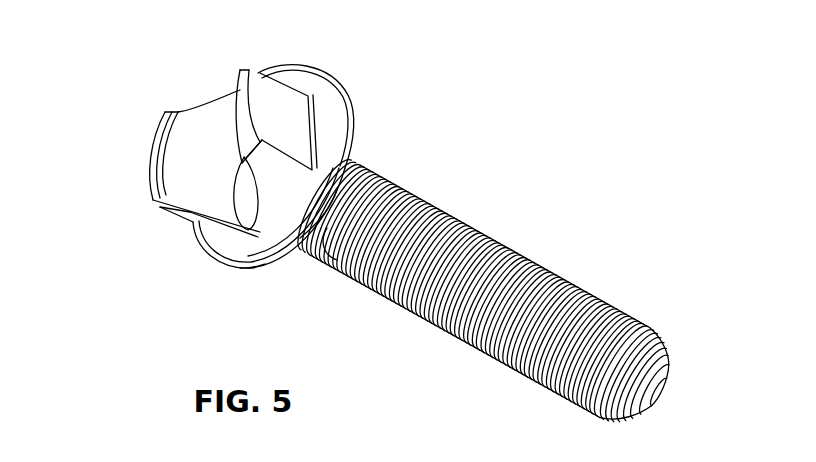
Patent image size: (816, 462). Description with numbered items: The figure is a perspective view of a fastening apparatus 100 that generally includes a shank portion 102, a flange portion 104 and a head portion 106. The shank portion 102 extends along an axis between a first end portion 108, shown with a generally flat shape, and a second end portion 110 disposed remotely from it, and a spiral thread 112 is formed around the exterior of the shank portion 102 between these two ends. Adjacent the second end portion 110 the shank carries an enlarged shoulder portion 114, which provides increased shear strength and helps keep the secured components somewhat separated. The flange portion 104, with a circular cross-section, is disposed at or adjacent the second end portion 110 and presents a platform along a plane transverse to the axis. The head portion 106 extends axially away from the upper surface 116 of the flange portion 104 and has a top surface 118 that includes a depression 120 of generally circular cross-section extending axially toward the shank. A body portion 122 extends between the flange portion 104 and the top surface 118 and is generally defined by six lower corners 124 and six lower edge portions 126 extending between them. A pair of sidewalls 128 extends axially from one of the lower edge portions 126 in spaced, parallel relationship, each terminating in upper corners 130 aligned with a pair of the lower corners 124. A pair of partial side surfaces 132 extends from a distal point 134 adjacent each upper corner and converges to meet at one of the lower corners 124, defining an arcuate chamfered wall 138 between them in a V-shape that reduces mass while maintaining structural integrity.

The fastening apparatus 100 is at (445, 99).
The shank portion 102 is at (577, 293).
The flange portion 104 is at (213, 263).
The head portion 106 is at (126, 127).
The first end portion 108 is at (660, 376).
The second end portion 110 is at (364, 192).
The spiral thread 112 is at (477, 305).
The enlarged shoulder portion 114 is at (326, 262).
The upper surface 116 is at (261, 267).
The top surface 118 is at (240, 92).
The depression 120 is at (192, 146).
The body portion 122 is at (147, 215).
The lower corners 124 is at (275, 168).
The lower edge portions 126 is at (358, 116).
The sidewalls 128 is at (277, 88).
The upper corners 130 is at (274, 92).
The partial side surfaces 132 is at (345, 132).
The distal point 134 is at (253, 265).
The chamfered wall 138 is at (186, 203).